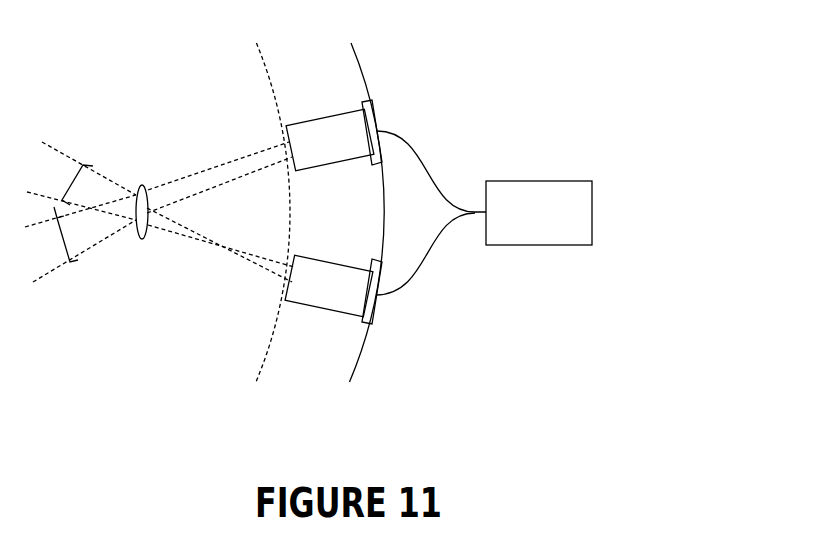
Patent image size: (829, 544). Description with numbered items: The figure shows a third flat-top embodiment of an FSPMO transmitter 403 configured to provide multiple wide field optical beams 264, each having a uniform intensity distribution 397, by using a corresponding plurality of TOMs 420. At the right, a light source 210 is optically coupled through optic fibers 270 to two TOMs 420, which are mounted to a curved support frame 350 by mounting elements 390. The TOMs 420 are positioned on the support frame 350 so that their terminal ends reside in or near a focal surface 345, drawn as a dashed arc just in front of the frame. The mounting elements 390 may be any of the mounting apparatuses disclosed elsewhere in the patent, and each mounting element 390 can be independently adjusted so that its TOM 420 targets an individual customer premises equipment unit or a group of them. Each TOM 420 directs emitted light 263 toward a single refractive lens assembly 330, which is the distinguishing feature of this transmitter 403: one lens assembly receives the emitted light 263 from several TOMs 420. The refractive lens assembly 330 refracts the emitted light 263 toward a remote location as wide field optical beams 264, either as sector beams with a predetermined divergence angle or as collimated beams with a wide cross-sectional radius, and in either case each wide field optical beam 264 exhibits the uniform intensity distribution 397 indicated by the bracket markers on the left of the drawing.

The FSPMO transmitter 403 is at (606, 48).
The focal surface 345 is at (261, 54).
The support frame 350 is at (365, 354).
The TOM 420 is at (308, 168).
The mounting element 390 is at (375, 103).
The optic fiber 270 is at (424, 163).
The light source 210 is at (592, 193).
The emitted light 263 is at (230, 168).
The wide field optical beam 264 is at (108, 192).
The refractive lens assembly 330 is at (144, 240).
The uniform intensity distribution 397 is at (86, 166).